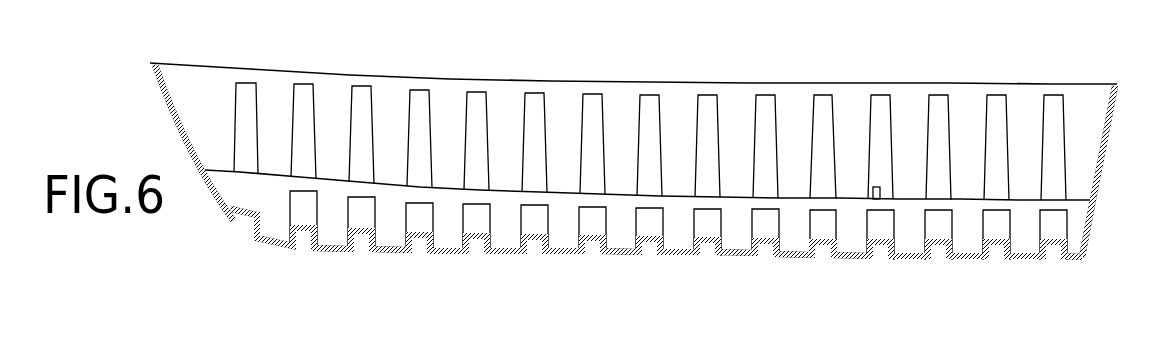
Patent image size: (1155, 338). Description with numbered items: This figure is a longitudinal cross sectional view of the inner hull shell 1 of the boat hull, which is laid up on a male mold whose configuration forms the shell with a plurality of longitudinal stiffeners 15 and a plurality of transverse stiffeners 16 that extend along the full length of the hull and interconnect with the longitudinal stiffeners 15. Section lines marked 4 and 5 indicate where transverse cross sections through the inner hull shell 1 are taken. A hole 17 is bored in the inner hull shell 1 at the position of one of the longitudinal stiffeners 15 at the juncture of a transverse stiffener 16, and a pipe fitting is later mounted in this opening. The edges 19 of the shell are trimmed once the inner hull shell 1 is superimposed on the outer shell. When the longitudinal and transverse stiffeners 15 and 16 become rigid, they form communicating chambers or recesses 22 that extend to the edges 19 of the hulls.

The housing wall 1 is at (1103, 147).
The section line 4- 4 is at (593, 42).
The section line 5- 5 is at (737, 43).
The longitudinal stiffener 15 is at (274, 176).
The transverse stiffener 16 is at (477, 130).
The hole 17 is at (875, 187).
The edge 19 is at (212, 68).
The chamber or recess 22 is at (993, 244).